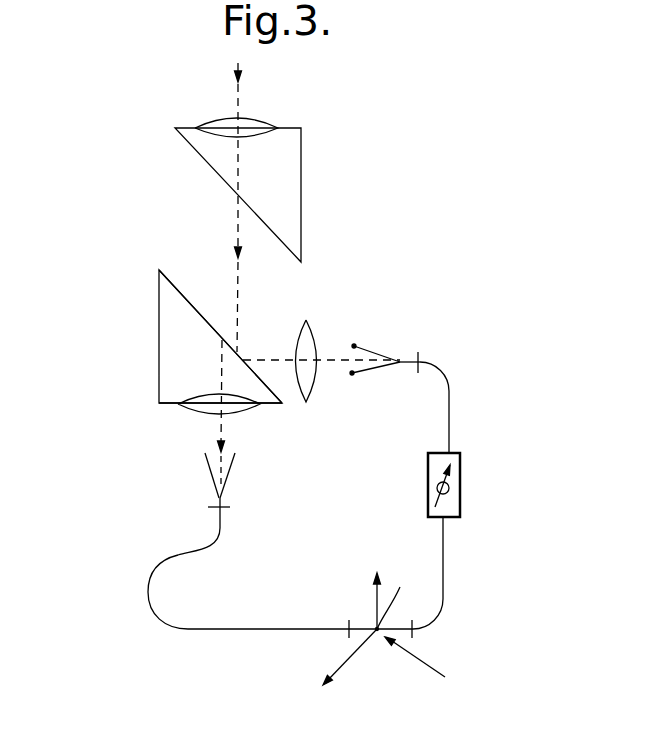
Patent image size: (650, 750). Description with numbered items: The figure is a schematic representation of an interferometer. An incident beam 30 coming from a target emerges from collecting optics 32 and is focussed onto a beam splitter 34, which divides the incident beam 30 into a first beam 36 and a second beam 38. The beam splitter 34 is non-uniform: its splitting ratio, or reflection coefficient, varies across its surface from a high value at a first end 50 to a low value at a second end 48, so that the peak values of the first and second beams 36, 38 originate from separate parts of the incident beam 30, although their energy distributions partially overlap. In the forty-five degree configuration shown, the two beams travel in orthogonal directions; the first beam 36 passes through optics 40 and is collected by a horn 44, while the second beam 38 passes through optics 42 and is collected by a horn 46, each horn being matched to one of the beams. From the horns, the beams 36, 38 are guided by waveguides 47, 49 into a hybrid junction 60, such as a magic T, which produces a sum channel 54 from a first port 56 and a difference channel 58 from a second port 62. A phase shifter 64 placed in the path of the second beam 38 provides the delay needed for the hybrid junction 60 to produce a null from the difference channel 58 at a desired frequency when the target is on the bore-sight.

The incident beam 30 is at (238, 220).
The collecting optics 32 is at (203, 128).
The beam splitter 34 is at (176, 275).
The first beam 36 is at (222, 433).
The second beam 38 is at (343, 360).
The optics 40 is at (255, 408).
The optics 42 is at (316, 380).
The horn 44 is at (217, 488).
The horn 46 is at (400, 360).
The waveguide 47 is at (147, 595).
The second end 48 is at (158, 272).
The waveguide 49 is at (450, 413).
The first end 50 is at (278, 398).
The sum channel 54 is at (343, 658).
The first port 56 is at (377, 632).
The difference channel 58 is at (377, 608).
The hybrid junction 60 is at (434, 667).
The second port 62 is at (395, 594).
The phase shifter 64 is at (470, 475).